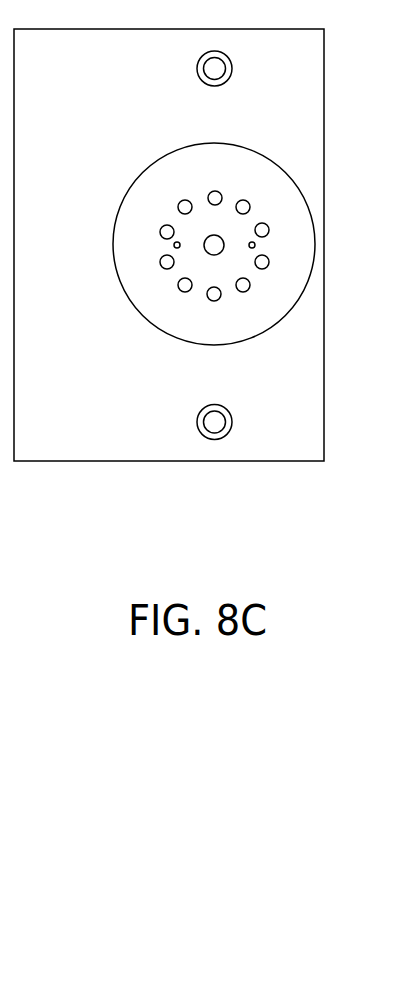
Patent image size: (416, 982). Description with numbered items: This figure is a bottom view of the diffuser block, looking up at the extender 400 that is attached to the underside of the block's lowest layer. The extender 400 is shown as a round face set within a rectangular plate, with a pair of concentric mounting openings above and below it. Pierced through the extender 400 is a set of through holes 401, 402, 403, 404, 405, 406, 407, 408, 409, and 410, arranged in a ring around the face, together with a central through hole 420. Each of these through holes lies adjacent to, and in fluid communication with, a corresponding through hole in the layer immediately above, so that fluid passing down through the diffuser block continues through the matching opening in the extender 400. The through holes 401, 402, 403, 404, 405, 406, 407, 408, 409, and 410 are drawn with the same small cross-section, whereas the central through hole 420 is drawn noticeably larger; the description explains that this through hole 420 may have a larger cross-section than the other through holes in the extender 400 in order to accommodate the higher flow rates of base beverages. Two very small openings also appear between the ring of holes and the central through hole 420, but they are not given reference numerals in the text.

The extender 400 is at (235, 325).
The through hole 401 is at (216, 191).
The through hole 402 is at (248, 203).
The through hole 403 is at (268, 226).
The through hole 404 is at (269, 262).
The through hole 405 is at (250, 285).
The through hole 406 is at (213, 301).
The through hole 407 is at (179, 289).
The through hole 408 is at (160, 265).
The through hole 409 is at (161, 228).
The through hole 410 is at (179, 203).
The through hole 420 is at (211, 236).